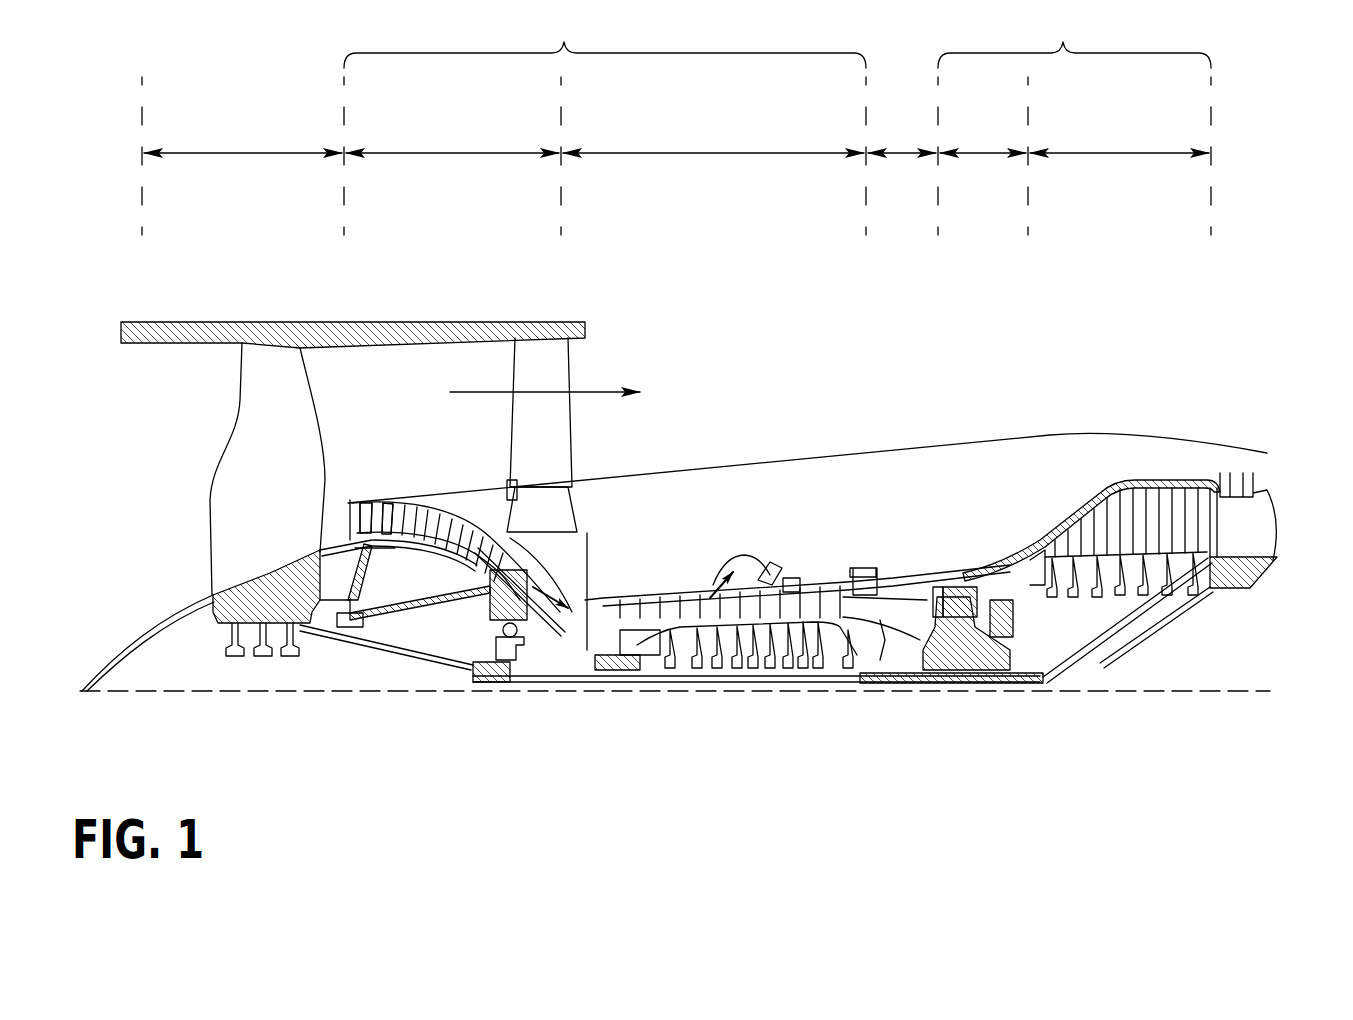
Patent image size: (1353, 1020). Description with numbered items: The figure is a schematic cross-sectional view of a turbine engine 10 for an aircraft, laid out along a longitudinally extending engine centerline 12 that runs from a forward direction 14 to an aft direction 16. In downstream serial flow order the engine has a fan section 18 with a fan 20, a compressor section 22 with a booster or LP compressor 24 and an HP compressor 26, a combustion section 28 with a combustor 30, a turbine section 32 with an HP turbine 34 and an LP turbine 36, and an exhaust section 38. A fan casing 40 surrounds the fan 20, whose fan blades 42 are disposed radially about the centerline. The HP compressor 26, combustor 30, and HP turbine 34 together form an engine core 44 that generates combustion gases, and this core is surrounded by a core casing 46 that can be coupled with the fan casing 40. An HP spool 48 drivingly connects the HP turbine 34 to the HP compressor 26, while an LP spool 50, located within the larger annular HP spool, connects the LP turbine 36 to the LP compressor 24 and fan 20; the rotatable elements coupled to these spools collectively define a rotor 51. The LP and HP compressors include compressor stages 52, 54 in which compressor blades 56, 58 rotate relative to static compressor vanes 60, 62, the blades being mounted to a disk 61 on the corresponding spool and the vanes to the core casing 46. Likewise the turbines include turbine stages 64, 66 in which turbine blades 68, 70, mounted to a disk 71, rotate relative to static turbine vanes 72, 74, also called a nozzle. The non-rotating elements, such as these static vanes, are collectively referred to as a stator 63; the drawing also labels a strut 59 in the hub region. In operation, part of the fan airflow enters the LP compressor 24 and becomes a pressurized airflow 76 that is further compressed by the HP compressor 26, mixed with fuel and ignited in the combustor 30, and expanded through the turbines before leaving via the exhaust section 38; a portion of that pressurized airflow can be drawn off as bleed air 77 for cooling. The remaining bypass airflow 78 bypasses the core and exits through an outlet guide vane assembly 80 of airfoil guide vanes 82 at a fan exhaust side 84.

The turbine engine 10 is at (890, 312).
The engine centerline 12 is at (240, 694).
The forward direction 14 is at (88, 457).
The aft direction 16 is at (1298, 542).
The fan section 18 is at (243, 138).
The fan 20 is at (178, 532).
The compressor section 22 is at (605, 38).
The LP compressor 24 is at (452, 138).
The HP compressor 26 is at (713, 138).
The combustion section 28 is at (902, 133).
The combustor 30 is at (900, 578).
The turbine section 32 is at (1074, 38).
The HP turbine 34 is at (983, 135).
The LP turbine 36 is at (1119, 138).
The exhaust section 38 is at (1285, 490).
The fan casing 40 is at (265, 337).
The fan blades 42 is at (315, 395).
The engine core 44 is at (845, 492).
The core casing 46 is at (1160, 478).
The HP spool 48 is at (877, 660).
The LP spool 50 is at (493, 684).
The rotor 51 is at (445, 556).
The compressor stages 52 is at (409, 445).
The compressor stages 54 is at (620, 507).
The compressor blades 56 is at (385, 505).
The compressor blades 58 is at (632, 625).
The strut 59 is at (380, 550).
The static compressor vanes 60 is at (364, 505).
The disk 61 is at (638, 645).
The static compressor vanes 62 is at (607, 603).
The stator 63 is at (616, 650).
The turbine stages 64 is at (933, 492).
The turbine stages 66 is at (1037, 443).
The turbine blades 68 is at (957, 585).
The turbine blades 70 is at (1060, 540).
The disk 71 is at (953, 630).
The static turbine vanes 72 is at (927, 578).
The static turbine vanes 74 is at (1042, 548).
The pressurized airflow 76 is at (575, 550).
The bleed air 77 is at (722, 580).
The bypass airflow 78 is at (470, 392).
The outlet guide vane assembly 80 is at (592, 445).
The airfoil guide vanes 82 is at (520, 437).
The fan exhaust side 84 is at (617, 350).